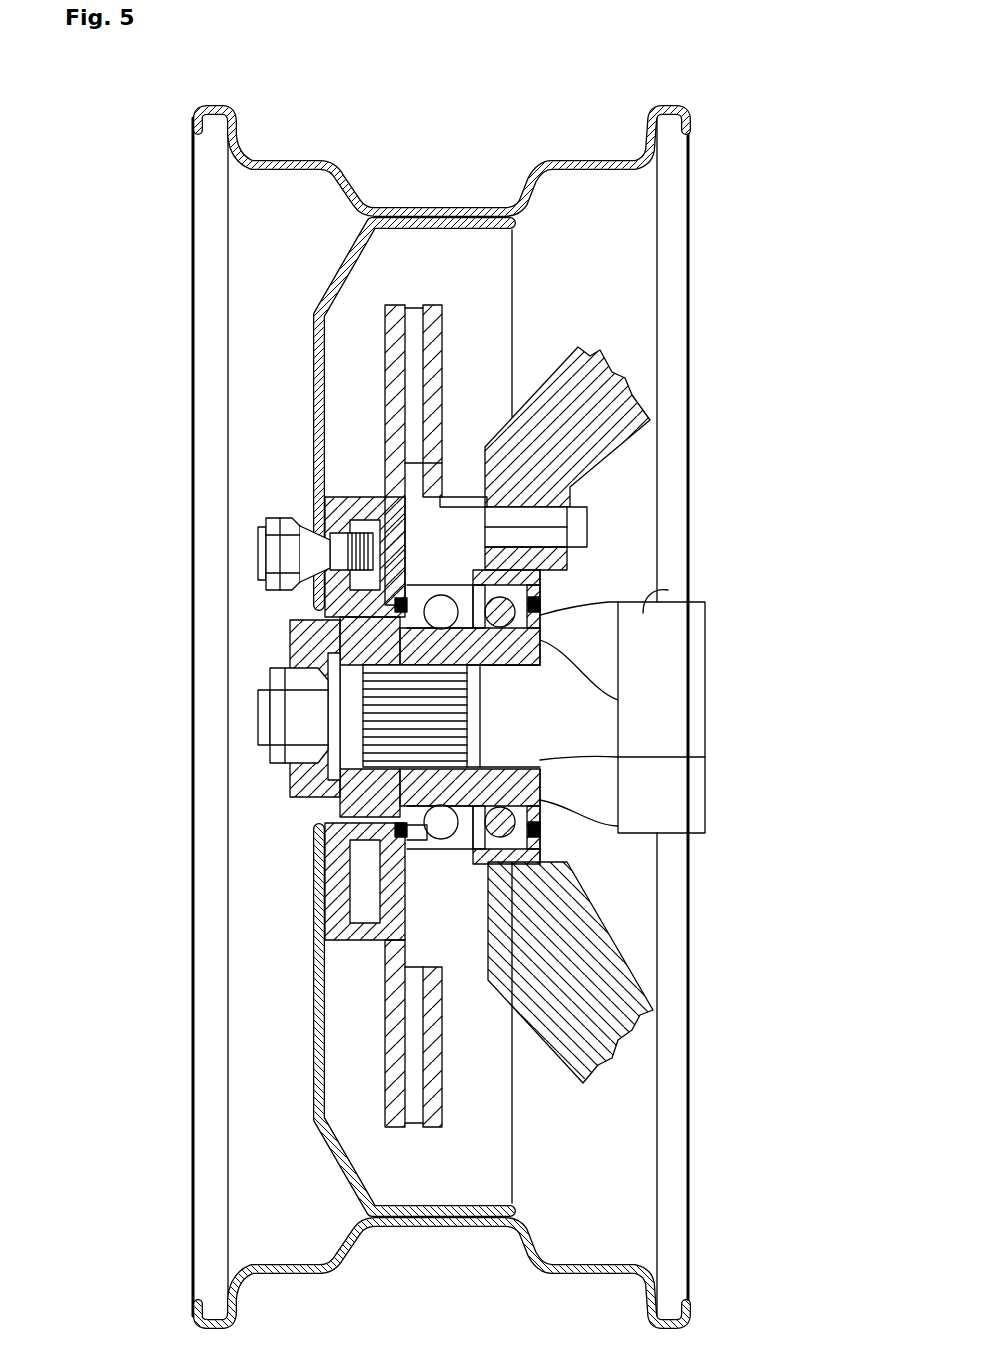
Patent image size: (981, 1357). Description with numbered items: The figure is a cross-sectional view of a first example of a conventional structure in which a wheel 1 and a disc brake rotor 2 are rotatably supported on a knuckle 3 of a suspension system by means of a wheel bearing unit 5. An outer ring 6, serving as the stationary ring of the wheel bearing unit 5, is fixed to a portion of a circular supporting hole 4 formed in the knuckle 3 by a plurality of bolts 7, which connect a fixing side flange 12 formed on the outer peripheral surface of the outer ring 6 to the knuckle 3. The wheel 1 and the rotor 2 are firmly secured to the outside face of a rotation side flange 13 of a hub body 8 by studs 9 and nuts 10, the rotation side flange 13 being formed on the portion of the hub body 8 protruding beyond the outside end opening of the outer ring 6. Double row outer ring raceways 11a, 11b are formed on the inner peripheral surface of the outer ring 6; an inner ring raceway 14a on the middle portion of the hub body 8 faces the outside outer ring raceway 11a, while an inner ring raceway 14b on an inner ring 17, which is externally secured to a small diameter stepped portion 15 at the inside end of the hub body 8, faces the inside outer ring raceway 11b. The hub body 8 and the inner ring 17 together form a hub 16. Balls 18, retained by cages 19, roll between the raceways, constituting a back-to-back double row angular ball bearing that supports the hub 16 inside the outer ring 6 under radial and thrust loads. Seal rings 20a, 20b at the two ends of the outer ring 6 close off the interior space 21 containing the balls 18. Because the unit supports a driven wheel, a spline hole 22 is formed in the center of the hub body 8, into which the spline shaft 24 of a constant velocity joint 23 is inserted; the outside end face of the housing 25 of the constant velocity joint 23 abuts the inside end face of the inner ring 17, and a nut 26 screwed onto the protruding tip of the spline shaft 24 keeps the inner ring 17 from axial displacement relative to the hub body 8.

The wheel 1 is at (285, 160).
The rotor 2 is at (433, 305).
The knuckle 3 is at (600, 405).
The circular supporting hole 4 is at (548, 862).
The wheel bearing unit 5 is at (168, 466).
The outer ring 6 is at (445, 840).
The bolts 7 is at (548, 520).
The hub body 8 is at (330, 630).
The studs 9 is at (378, 520).
The nuts 10 is at (268, 548).
The outer ring raceway 11a is at (395, 605).
The outer ring raceway 11b is at (545, 600).
The fixing side flange 12 is at (455, 505).
The rotation side flange 13 is at (370, 890).
The inner ring raceway 14a is at (430, 842).
The inner ring raceway 14b is at (545, 812).
The small diameter stepped portion 15 is at (545, 668).
The hub 16 is at (366, 797).
The inner ring 17 is at (545, 640).
The balls 18 is at (430, 598).
The cages 19 is at (330, 676).
The seal ring 20a is at (405, 832).
The seal ring 20b is at (530, 595).
The interior space 21 is at (470, 590).
The spline hole 22 is at (335, 748).
The constant velocity joint 23 is at (665, 650).
The spline shaft 24 is at (385, 718).
The housing 25 is at (645, 602).
The nut 26 is at (285, 700).